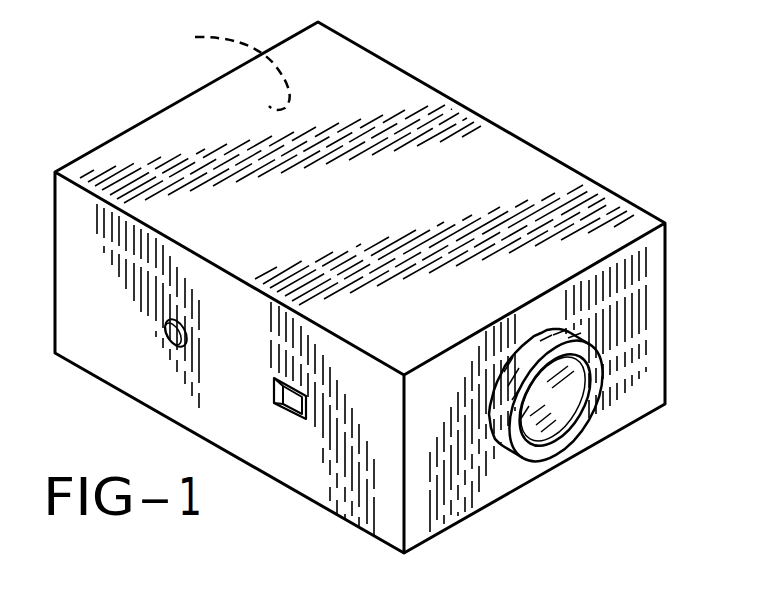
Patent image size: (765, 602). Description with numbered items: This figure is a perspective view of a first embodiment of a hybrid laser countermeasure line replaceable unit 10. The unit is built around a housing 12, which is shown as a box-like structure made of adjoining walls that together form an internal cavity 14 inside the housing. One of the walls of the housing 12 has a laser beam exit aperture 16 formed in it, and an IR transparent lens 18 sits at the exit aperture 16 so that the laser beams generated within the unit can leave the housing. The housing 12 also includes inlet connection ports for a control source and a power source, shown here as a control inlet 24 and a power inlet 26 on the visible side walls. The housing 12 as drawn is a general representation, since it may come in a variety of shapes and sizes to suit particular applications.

The hybrid laser countermeasure line replaceable unit 10 is at (521, 95).
The housing 12 is at (141, 112).
The internal cavity 14 is at (225, 66).
The laser beam exit aperture 16 is at (556, 397).
The IR transparent lens 18 is at (555, 400).
The control inlet 24 is at (168, 333).
The power inlet 26 is at (292, 410).